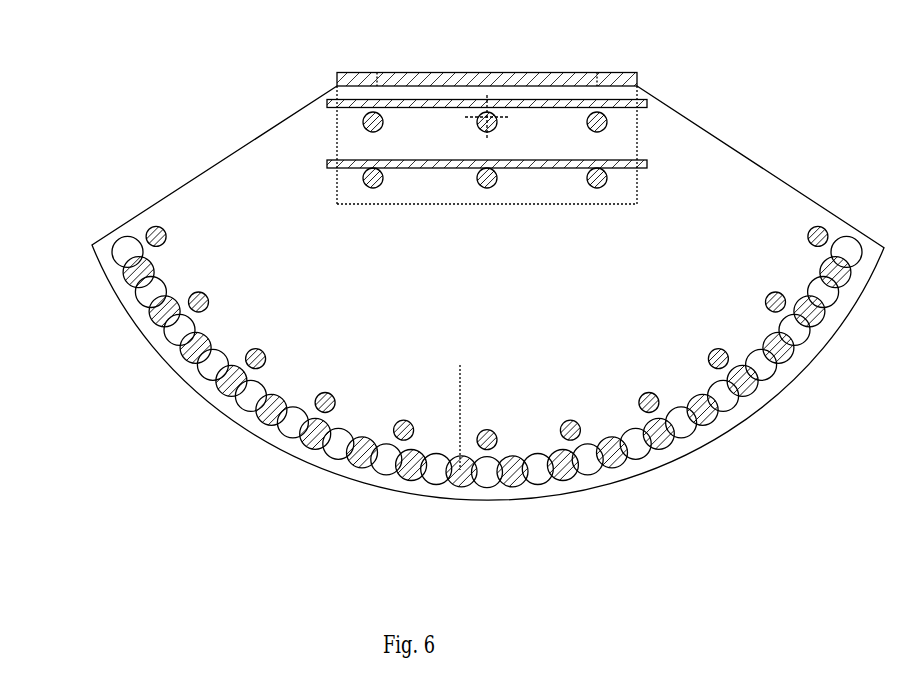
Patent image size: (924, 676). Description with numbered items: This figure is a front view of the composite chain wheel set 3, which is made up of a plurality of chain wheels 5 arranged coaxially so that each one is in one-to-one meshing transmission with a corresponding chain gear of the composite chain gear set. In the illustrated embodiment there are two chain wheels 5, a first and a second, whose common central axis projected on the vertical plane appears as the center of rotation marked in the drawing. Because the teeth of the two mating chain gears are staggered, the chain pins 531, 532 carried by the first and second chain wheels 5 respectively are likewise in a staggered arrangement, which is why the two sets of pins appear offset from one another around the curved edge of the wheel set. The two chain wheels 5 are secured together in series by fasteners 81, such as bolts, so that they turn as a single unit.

The composite chain wheel set 3 is at (536, 50).
The chain wheel 5 is at (210, 208).
The fastener 81 is at (820, 232).
The chain pin 531 is at (580, 473).
The chain pin 532 is at (588, 458).